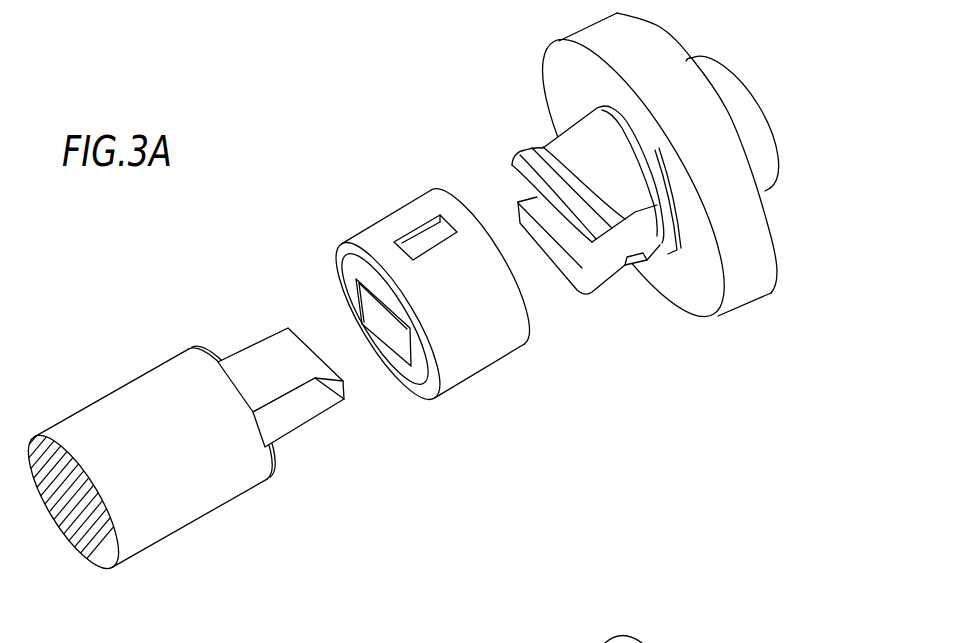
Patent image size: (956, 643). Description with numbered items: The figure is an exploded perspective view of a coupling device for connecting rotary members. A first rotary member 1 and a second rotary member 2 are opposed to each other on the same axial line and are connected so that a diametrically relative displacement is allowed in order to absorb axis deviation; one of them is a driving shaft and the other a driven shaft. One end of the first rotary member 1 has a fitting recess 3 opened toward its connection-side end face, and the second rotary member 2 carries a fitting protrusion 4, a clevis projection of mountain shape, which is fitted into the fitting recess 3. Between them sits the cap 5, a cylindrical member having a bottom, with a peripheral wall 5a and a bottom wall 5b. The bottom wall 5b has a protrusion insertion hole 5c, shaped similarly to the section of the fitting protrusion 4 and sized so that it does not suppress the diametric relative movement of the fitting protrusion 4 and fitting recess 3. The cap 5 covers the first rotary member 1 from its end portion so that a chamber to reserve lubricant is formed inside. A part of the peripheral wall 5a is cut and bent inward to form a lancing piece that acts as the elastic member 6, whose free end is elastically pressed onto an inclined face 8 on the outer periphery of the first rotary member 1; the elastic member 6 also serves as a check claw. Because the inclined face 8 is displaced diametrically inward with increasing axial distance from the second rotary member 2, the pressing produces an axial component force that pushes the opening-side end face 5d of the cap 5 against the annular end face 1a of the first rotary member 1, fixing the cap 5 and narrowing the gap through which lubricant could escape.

The first rotary member 1 is at (654, 183).
The annular end face 1a is at (705, 295).
The second rotary member 2 is at (160, 541).
The fitting recess 3 is at (586, 216).
The fitting protrusion 4 is at (293, 412).
The cap 5 is at (452, 306).
The peripheral wall 5a is at (500, 337).
The bottom wall 5b is at (418, 373).
The protrusion insertion hole 5c is at (368, 290).
The opening-side end face 5d is at (528, 313).
The elastic member 6 is at (427, 233).
The inclined face 8 is at (553, 150).